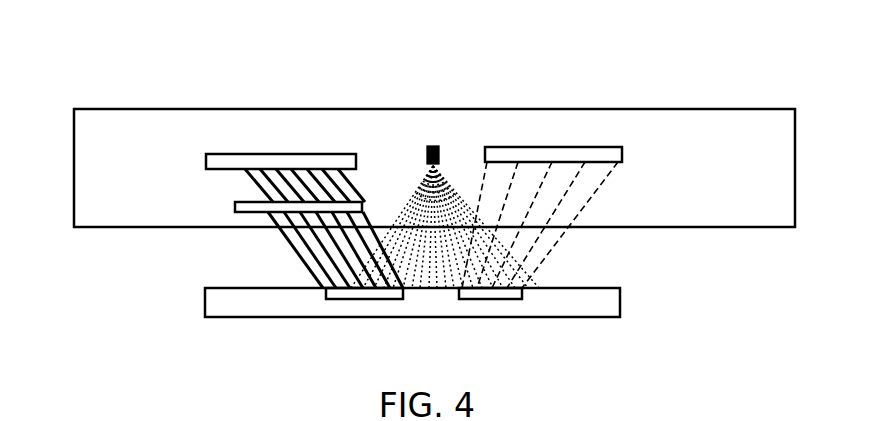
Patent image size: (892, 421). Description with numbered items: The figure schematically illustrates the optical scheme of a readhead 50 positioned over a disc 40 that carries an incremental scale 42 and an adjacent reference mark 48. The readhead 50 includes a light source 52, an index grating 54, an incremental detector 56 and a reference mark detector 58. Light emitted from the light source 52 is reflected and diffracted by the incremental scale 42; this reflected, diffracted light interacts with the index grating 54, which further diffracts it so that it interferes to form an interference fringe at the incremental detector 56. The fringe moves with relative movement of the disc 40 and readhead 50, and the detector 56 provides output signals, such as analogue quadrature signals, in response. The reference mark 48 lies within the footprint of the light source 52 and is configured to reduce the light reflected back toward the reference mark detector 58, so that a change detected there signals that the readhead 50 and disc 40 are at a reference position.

The disc 40 is at (620, 298).
The incremental scale 42 is at (366, 301).
The reference mark 48 is at (497, 301).
The readhead 50 is at (697, 108).
The light source 52 is at (430, 146).
The index grating 54 is at (244, 213).
The incremental detector 56 is at (232, 153).
The reference mark detector 58 is at (560, 147).